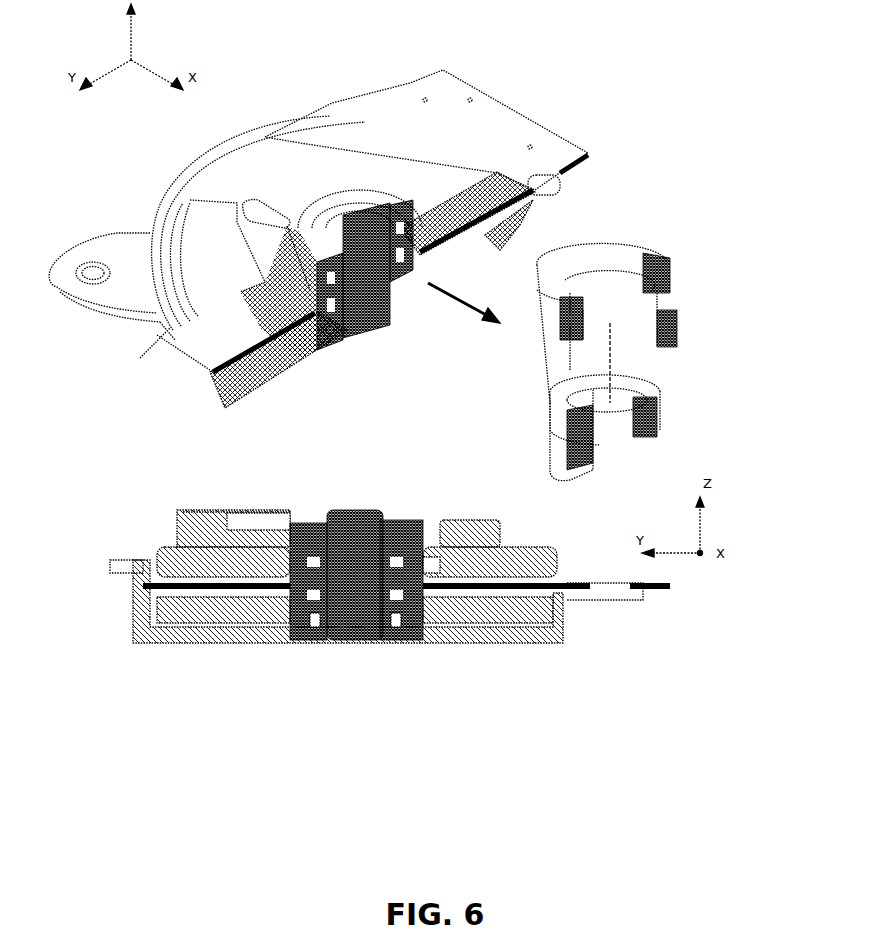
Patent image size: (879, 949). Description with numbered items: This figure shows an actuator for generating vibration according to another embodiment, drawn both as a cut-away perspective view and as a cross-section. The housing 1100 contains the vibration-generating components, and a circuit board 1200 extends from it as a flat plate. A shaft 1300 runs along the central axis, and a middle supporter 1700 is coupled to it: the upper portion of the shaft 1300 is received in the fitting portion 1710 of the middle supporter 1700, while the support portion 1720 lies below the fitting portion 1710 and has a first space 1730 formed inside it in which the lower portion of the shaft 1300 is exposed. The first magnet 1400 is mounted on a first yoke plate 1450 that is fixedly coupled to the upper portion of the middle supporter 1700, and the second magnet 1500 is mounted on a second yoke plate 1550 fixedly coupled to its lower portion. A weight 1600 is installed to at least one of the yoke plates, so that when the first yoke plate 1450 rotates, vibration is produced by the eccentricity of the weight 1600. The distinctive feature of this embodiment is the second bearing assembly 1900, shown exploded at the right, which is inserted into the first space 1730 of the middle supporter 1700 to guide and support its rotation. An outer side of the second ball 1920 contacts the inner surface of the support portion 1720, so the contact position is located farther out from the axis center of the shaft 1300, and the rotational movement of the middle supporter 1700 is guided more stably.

The housing 1100 is at (173, 330).
The circuit board 1200 is at (503, 120).
The shaft 1300 is at (367, 330).
The first magnet 1400 is at (503, 560).
The first yoke plate 1450 is at (353, 153).
The second magnet 1500 is at (523, 613).
The second yoke plate 1550 is at (460, 623).
The weight 1600 is at (183, 512).
The middle supporter 1700 is at (553, 420).
The fitting portion 1710 is at (657, 270).
The support portion 1720 is at (657, 322).
The first space 1730 is at (627, 330).
The second bearing assembly 1900 is at (550, 450).
The second ball 1920 is at (410, 605).